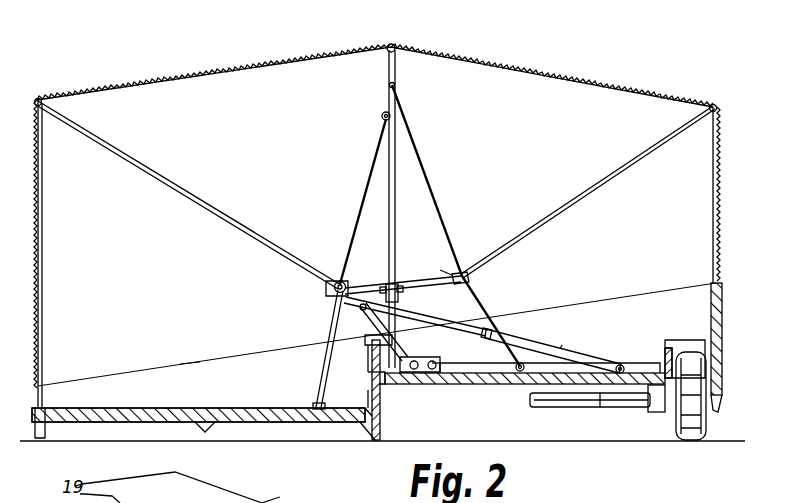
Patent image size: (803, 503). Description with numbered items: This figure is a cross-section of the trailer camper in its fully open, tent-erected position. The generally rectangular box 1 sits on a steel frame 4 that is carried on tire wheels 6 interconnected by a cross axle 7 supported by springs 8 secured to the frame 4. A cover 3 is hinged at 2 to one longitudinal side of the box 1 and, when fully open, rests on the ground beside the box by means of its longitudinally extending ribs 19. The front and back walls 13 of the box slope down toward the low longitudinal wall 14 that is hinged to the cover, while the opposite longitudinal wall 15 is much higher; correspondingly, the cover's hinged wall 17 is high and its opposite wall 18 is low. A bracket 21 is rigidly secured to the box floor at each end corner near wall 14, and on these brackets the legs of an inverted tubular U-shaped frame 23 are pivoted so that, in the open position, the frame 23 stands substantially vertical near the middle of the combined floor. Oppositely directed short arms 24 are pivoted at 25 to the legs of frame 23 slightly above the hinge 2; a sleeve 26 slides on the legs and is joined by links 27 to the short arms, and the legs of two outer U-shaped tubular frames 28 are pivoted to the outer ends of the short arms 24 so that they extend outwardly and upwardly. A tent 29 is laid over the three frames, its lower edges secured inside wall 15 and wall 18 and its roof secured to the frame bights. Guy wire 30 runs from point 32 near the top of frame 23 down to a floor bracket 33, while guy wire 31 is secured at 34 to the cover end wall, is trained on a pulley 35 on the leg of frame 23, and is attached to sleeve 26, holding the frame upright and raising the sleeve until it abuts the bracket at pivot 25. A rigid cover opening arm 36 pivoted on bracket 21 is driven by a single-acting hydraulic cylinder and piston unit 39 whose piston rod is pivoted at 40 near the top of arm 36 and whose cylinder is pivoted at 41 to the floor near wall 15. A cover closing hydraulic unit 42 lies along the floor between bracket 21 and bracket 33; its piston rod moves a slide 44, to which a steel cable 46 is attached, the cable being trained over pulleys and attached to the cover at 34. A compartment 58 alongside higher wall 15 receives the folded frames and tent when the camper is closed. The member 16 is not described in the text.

The box 1 is at (515, 386).
The hinge 2 is at (362, 329).
The cover 3 is at (245, 407).
The steel frame 4 is at (380, 420).
The tire wheels 6 is at (678, 419).
The cross axle 7 is at (586, 405).
The springs 8 is at (650, 408).
The front and back walls of box 13 is at (600, 301).
The longitudinal wall of box 14 is at (372, 355).
The higher longitudinal wall of box 15 is at (724, 335).
The inner wall 16 is at (192, 364).
The longitudinal wall of cover 17 is at (371, 397).
The opposite longitudinal wall of cover 18 is at (42, 400).
The longitudinally extending ribs 19 is at (198, 410).
The bracket 21 is at (437, 378).
The inverted tubular U-shaped frame 23 is at (388, 98).
The short arms 24 is at (450, 270).
The pivot of short arms 25 is at (402, 289).
The sleeve 26 is at (440, 293).
The links 27 is at (470, 282).
The U-shaped tubular frames 28 is at (248, 198).
The tent 29 is at (168, 73).
The guy wire 30 is at (437, 203).
The guy wire 31 is at (388, 150).
The attachment point of guy wire 32 is at (398, 86).
The bracket 33 is at (540, 404).
The attachment point on cover 34 is at (317, 405).
The pulley 35 is at (381, 116).
The cover opening arm 36 is at (347, 284).
The hydraulic cylinder and piston unit 39 is at (520, 345).
The piston rod pivot 40 is at (336, 300).
The cylinder pivot 41 is at (622, 363).
The cover closing hydraulic cylinder and piston unit 42 is at (470, 386).
The slide 44 is at (560, 352).
The steel cable 46 is at (373, 375).
The compartment 58 is at (668, 342).